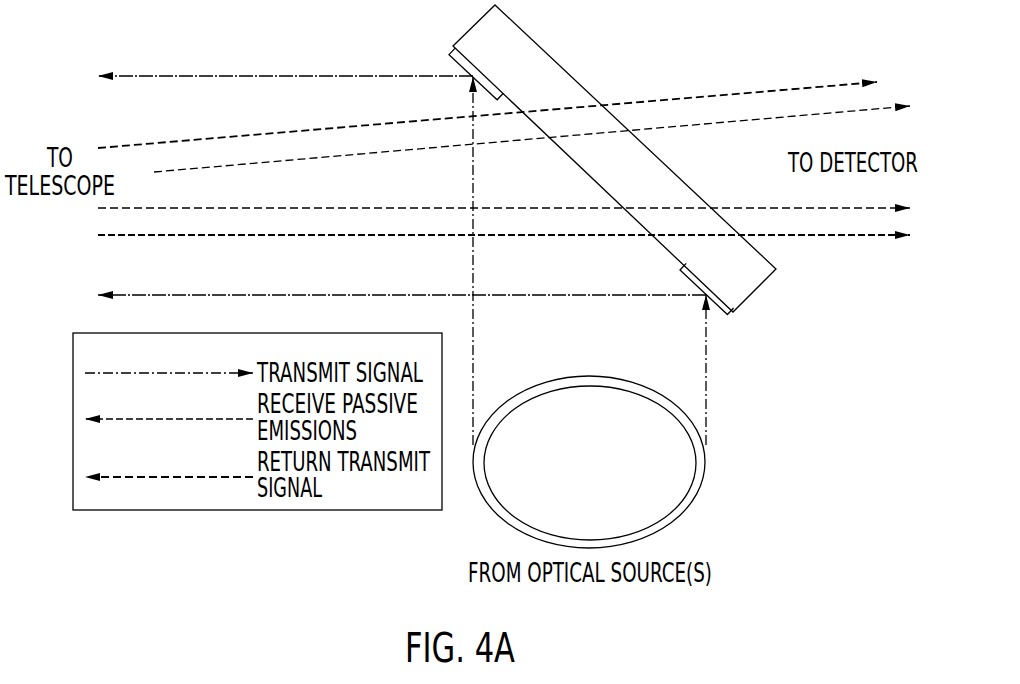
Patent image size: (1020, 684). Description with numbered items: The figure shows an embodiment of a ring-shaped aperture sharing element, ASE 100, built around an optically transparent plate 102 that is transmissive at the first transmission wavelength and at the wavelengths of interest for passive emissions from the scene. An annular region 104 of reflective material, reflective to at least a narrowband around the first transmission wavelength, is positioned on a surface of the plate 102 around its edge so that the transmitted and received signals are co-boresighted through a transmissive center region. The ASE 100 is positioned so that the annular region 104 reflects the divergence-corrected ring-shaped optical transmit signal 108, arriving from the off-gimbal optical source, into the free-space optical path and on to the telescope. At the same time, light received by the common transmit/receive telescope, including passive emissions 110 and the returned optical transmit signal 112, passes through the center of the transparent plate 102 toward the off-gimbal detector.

The ASE 100 is at (746, 38).
The optically transparent plate 102 is at (552, 58).
The annular region 104 is at (450, 52).
The optical transmit signal 108 is at (698, 493).
The passive emissions 110 is at (316, 207).
The returned optical transmit signal 112 is at (212, 138).